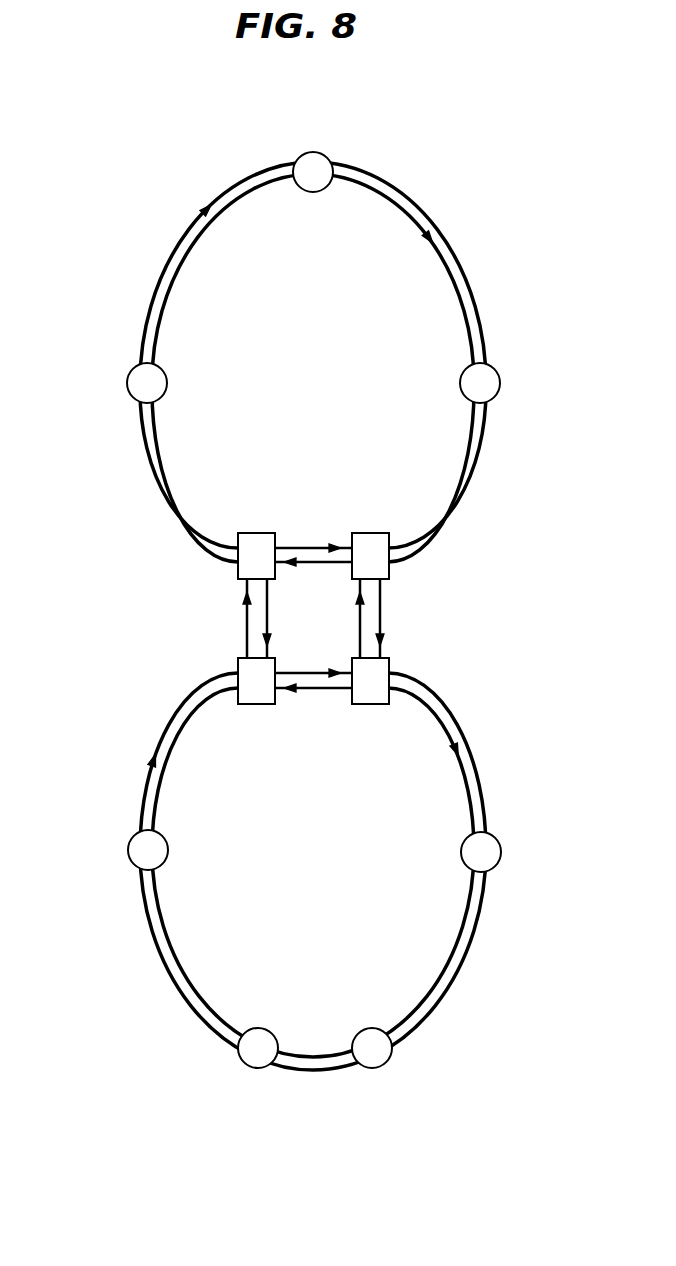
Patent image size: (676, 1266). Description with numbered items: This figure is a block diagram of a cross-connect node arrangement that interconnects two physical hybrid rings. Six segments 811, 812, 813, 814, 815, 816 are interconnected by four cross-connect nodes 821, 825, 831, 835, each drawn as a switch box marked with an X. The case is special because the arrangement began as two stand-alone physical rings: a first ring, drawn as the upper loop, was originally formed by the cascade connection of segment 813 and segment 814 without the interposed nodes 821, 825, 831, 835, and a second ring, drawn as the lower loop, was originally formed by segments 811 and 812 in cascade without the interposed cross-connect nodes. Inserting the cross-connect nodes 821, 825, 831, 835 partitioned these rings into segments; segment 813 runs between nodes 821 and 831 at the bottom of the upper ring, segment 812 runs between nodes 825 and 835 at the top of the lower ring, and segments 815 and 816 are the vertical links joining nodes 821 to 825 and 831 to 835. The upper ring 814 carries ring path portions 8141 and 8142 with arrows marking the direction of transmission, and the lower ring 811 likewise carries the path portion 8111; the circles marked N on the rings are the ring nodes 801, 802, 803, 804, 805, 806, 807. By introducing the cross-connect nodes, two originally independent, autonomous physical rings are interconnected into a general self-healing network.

The network node 801 is at (253, 1067).
The network node 802 is at (378, 1066).
The network node 803 is at (128, 852).
The network node 804 is at (500, 852).
The network node 805 is at (128, 378).
The network node 806 is at (500, 378).
The network node 807 is at (327, 156).
The segment 811 is at (333, 816).
The ring transmission path 8111 is at (172, 722).
The segment 812 is at (333, 726).
The segment 813 is at (333, 518).
The segment 814 is at (333, 329).
The ring transmission path 8141 is at (168, 262).
The ring transmission path 8142 is at (447, 268).
The segment 815 is at (240, 641).
The segment 816 is at (428, 629).
The cross-connect node 821 is at (240, 578).
The cross-connect node 825 is at (243, 664).
The cross-connect node 831 is at (385, 576).
The cross-connect node 835 is at (383, 665).